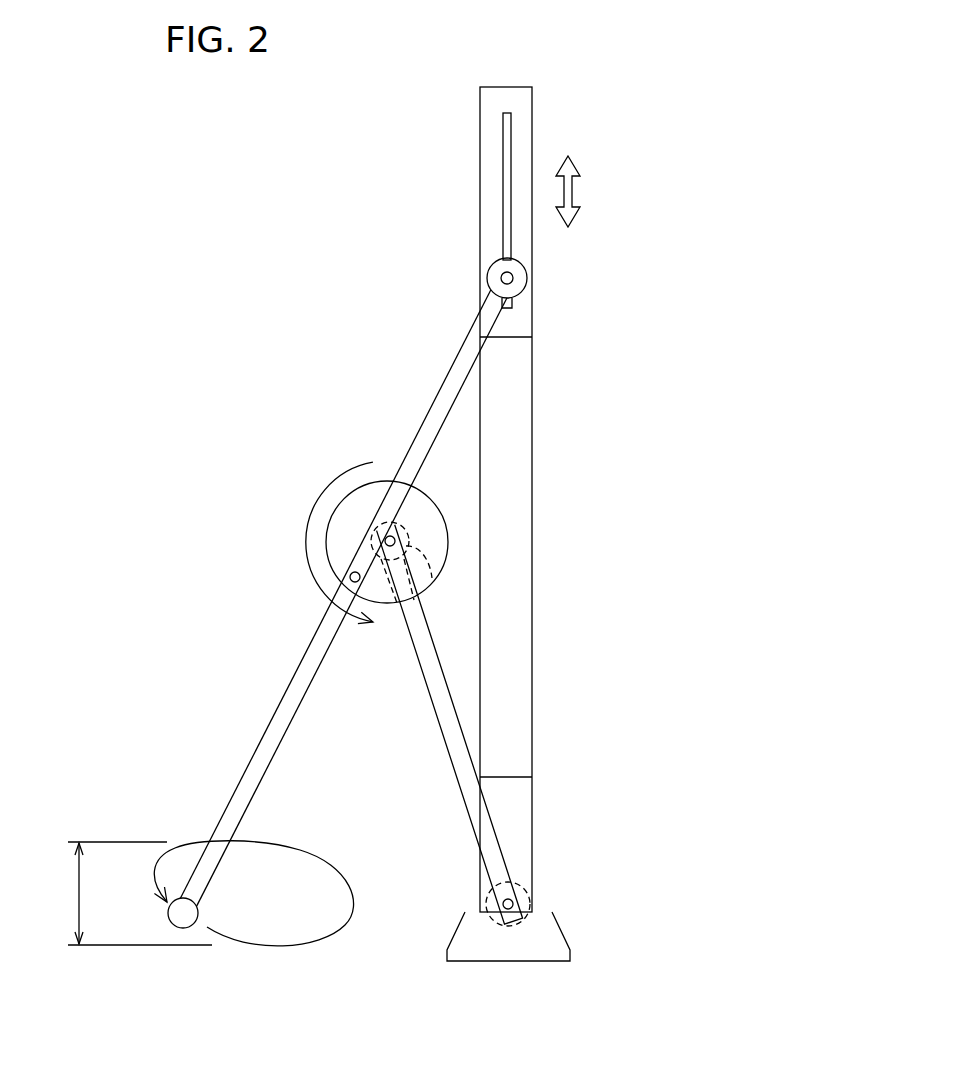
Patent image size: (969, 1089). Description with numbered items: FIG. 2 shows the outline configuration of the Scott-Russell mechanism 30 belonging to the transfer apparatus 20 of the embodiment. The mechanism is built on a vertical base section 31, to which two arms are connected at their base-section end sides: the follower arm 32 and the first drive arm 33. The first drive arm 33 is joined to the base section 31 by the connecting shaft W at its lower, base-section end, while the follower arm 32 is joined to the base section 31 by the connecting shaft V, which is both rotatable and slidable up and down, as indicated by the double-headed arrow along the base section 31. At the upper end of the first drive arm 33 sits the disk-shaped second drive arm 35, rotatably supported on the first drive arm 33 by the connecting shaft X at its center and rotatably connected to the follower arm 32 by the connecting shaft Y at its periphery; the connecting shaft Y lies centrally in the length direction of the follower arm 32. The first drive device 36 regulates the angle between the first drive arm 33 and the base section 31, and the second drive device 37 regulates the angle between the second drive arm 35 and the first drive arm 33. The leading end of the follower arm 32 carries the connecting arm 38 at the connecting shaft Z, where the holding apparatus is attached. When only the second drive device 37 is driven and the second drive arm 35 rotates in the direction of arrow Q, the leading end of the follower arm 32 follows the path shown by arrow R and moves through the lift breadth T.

The drive apparatus 20 is at (731, 128).
The Scott-Russell mechanism 30 is at (660, 288).
The base section 31 is at (517, 447).
The follower arm 32 is at (438, 410).
The first drive arm 33 is at (452, 748).
The second drive arm 35 is at (427, 593).
The first drive device 36 is at (530, 872).
The second drive device 37 is at (435, 577).
The connecting arm 38 is at (183, 928).
The connecting shaft V is at (535, 275).
The connecting shaft W is at (532, 899).
The connecting shaft X is at (408, 532).
The connecting shaft Y is at (342, 560).
The connecting shaft Z is at (154, 921).
The arrow Q is at (343, 473).
The arrow R is at (290, 850).
The lift breadth T is at (133, 893).